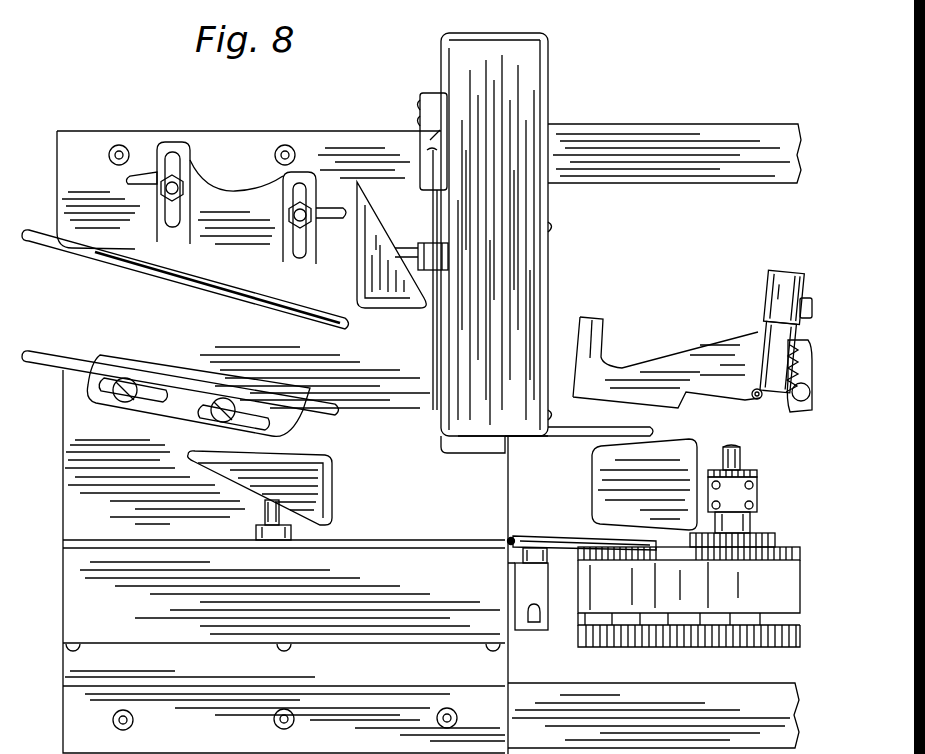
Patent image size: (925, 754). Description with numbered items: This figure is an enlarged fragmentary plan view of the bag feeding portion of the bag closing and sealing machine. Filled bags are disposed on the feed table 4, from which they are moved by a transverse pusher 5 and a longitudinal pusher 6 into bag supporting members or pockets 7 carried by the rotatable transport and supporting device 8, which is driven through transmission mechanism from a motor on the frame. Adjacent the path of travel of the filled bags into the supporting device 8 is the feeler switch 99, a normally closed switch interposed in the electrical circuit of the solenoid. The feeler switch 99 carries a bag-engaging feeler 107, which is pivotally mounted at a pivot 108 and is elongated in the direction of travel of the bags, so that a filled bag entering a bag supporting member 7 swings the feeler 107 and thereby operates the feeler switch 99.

The feed table 4 is at (243, 147).
The transverse pusher 5 is at (385, 308).
The longitudinal pusher 6 is at (326, 467).
The bag supporting member 7 is at (606, 481).
The rotatable transport and supporting device 8 is at (782, 560).
The feeler switch 99 is at (547, 605).
The bag-engaging feeler 107 is at (566, 537).
The pivotal mounting 108 is at (514, 536).